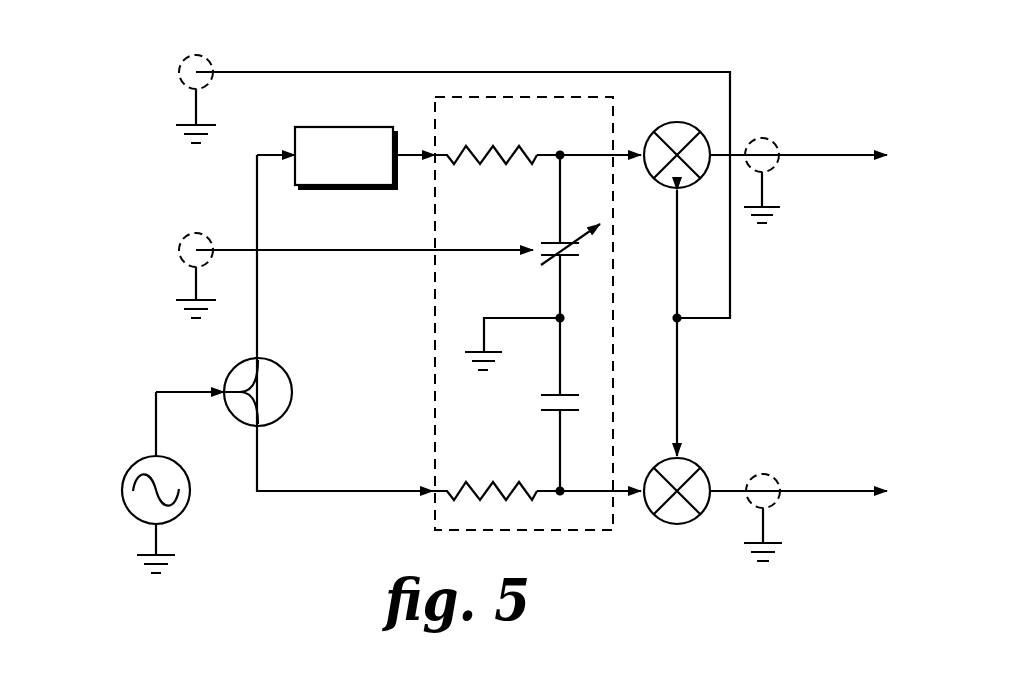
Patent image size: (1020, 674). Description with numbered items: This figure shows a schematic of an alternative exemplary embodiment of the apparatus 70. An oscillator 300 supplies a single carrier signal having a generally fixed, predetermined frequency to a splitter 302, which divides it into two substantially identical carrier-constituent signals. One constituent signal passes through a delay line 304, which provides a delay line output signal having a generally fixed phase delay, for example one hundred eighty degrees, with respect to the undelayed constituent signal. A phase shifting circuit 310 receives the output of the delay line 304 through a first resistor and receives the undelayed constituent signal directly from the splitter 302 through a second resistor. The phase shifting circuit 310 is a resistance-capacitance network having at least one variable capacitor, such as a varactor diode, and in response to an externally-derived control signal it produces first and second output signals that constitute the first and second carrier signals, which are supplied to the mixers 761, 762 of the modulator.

The apparatus 70 is at (481, 43).
The oscillator 300 is at (123, 475).
The splitter 302 is at (292, 383).
The delay line 304 is at (340, 127).
The phase shifting circuit 310 is at (423, 510).
The first mixer 761 is at (688, 122).
The second mixer 762 is at (688, 457).